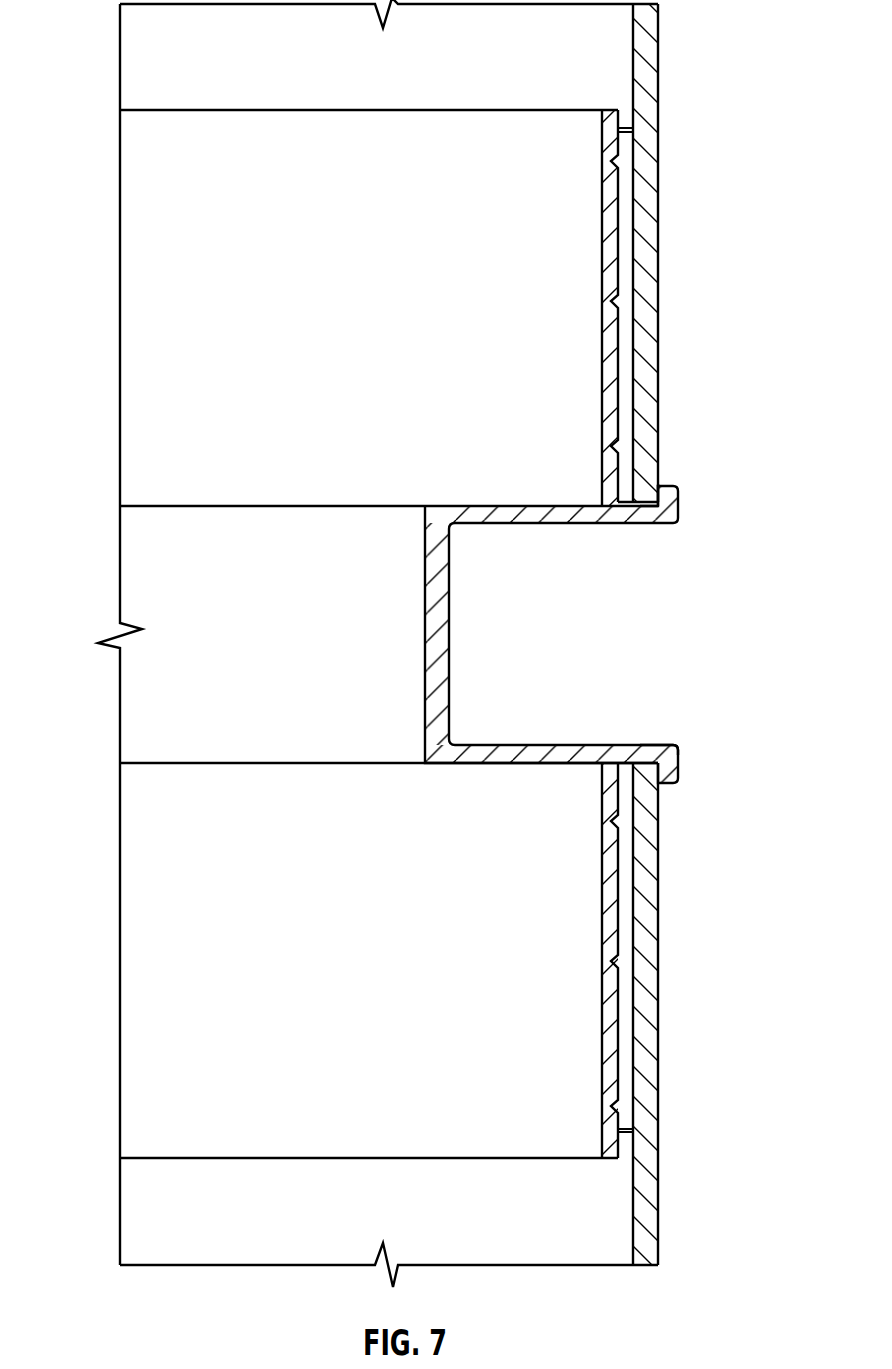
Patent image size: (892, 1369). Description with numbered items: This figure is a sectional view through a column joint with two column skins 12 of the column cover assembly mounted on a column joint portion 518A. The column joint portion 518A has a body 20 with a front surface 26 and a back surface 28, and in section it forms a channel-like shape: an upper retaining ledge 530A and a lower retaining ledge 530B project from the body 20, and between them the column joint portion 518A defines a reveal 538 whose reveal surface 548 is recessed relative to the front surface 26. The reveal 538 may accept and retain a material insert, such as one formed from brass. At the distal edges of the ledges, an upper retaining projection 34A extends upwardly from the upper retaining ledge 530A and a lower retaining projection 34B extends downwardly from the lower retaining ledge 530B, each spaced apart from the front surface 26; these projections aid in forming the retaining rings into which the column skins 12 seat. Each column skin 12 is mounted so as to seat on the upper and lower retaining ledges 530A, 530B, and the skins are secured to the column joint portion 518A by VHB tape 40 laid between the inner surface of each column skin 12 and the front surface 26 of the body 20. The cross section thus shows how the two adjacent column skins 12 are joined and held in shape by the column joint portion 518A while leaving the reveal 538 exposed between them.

The column skin 12 is at (660, 52).
The body 20 is at (533, 108).
The back surface 28 is at (382, 306).
The VHB tape 40 is at (622, 282).
The front surface 26 is at (620, 893).
The reveal 538 is at (601, 634).
The reveal surface 548 is at (451, 652).
The column joint portion 518A is at (662, 510).
The upper retaining ledge 530A is at (660, 497).
The lower retaining ledge 530B is at (678, 747).
The upper retaining projection 34A is at (678, 488).
The lower retaining projection 34B is at (665, 783).